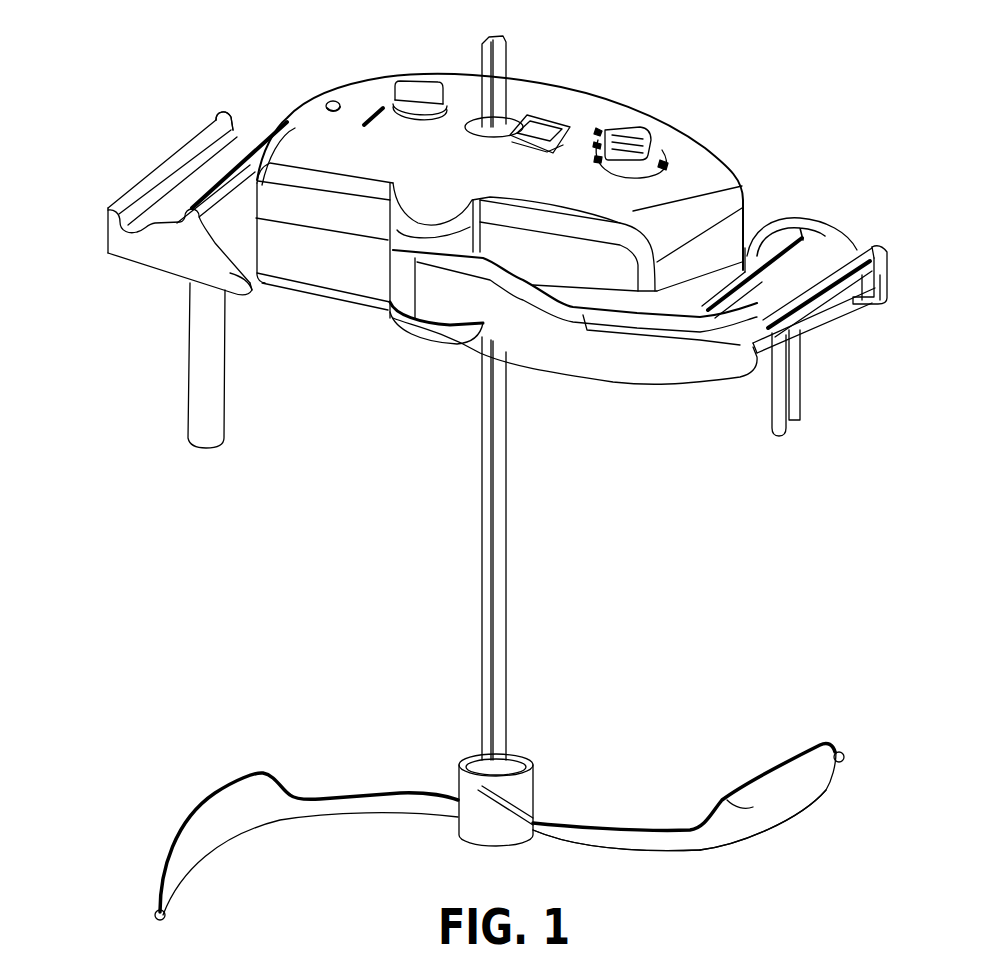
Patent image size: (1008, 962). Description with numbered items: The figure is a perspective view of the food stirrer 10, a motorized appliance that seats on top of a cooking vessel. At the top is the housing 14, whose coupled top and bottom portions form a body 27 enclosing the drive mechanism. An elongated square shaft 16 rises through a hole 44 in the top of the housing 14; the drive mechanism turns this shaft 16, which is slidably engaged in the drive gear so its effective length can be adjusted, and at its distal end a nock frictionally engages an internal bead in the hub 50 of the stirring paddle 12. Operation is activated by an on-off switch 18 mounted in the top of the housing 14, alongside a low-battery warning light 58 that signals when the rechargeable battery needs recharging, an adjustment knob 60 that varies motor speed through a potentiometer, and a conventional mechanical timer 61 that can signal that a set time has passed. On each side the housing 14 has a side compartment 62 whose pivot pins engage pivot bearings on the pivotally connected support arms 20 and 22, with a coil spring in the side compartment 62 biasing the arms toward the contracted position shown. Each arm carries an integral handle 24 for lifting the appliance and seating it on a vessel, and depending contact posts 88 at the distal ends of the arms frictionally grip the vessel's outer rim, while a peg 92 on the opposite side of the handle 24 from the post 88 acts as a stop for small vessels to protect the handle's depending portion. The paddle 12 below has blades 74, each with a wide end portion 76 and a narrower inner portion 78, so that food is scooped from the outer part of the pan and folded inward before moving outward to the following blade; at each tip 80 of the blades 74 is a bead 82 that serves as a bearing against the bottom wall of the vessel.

The food stirrer 10 is at (670, 113).
The stirring paddle 12 is at (783, 767).
The housing 14 is at (373, 77).
The elongated shaft 16 is at (510, 53).
The on-off switch 18 is at (563, 120).
The support arm 20 is at (277, 120).
The support arm 22 is at (823, 220).
The integral handle 24 is at (105, 216).
The body 27 is at (313, 273).
The hole 44 is at (516, 116).
The hub 50 is at (533, 780).
The low-battery warning light 58 is at (322, 98).
The adjustment knob 60 is at (417, 80).
The mechanical timer 61 is at (660, 151).
The side compartment 62 is at (397, 220).
The blade 74 is at (820, 800).
The wide end portion 76 is at (727, 800).
The narrower inner portion 78 is at (577, 830).
The tip 80 is at (827, 743).
The bead 82 is at (840, 757).
The contact post 88 is at (183, 317).
The peg 92 is at (767, 425).